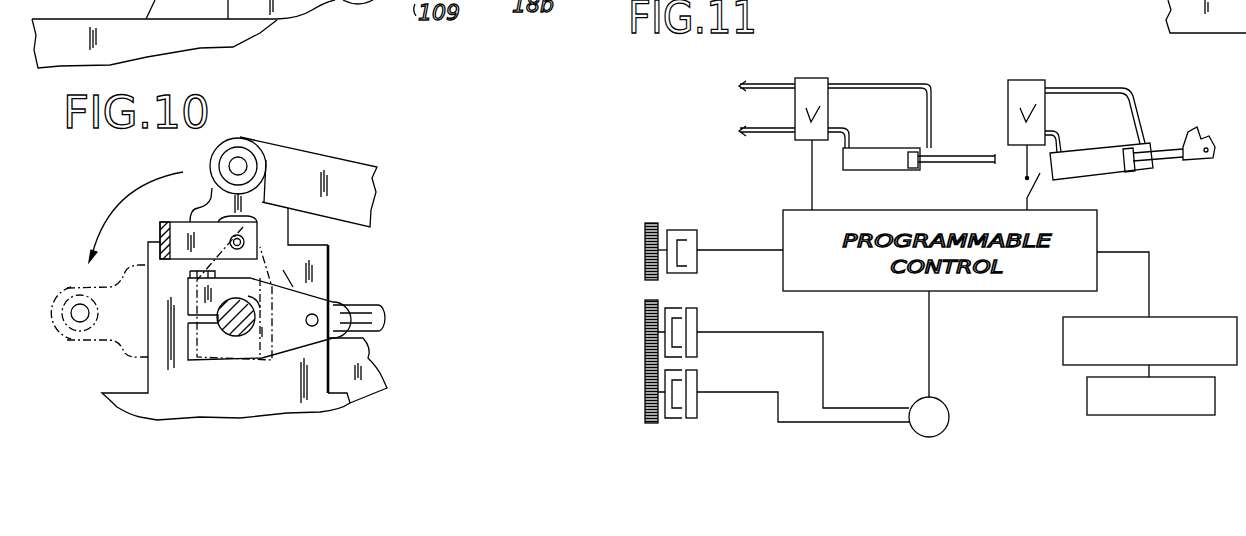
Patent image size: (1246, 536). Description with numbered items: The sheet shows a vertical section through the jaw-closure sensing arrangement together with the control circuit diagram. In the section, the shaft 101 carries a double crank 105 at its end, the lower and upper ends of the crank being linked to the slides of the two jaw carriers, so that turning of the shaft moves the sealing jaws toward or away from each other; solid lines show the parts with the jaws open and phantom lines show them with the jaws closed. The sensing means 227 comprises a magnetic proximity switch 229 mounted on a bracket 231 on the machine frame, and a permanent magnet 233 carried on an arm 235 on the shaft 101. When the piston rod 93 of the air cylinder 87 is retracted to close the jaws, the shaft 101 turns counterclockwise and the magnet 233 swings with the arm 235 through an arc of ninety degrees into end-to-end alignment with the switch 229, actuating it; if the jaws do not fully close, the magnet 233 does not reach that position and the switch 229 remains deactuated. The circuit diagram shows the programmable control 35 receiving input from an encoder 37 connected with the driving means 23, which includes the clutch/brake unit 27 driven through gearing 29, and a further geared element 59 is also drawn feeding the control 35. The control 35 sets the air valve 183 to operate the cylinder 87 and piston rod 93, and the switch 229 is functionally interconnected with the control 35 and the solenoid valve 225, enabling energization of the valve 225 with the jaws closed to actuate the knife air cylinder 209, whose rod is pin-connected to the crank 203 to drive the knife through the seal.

In FIG. 10, the shaft 101 is at (232, 334).
In FIG. 10, the double crank 105 is at (240, 137).
In FIG. 10, the sensing means 227 is at (260, 211).
In FIG. 10, the magnetic switch 229 is at (247, 240).
In FIG. 11, the magnetic switch 229 is at (1038, 188).
In FIG. 10, the bracket 231 is at (174, 251).
In FIG. 10, the permanent magnet 233 is at (318, 318).
In FIG. 10, the arm 235 is at (318, 340).
In FIG. 11, the air valve 183 is at (813, 78).
In FIG. 11, the air cylinder 87 is at (863, 173).
In FIG. 11, the piston rod 93 is at (965, 163).
In FIG. 11, the solenoid valve 225 is at (1027, 80).
In FIG. 11, the air cylinder 209 is at (1120, 180).
In FIG. 11, the crank 203 is at (1218, 106).
In FIG. 11, the gearing 29 is at (645, 246).
In FIG. 11, the electric clutch/brake unit 27 is at (692, 228).
In FIG. 11, the gear 59 is at (645, 378).
In FIG. 11, the programmable control 35 is at (970, 293).
In FIG. 11, the encoder 37 is at (1078, 365).
In FIG. 11, the driving means 23 is at (1087, 397).